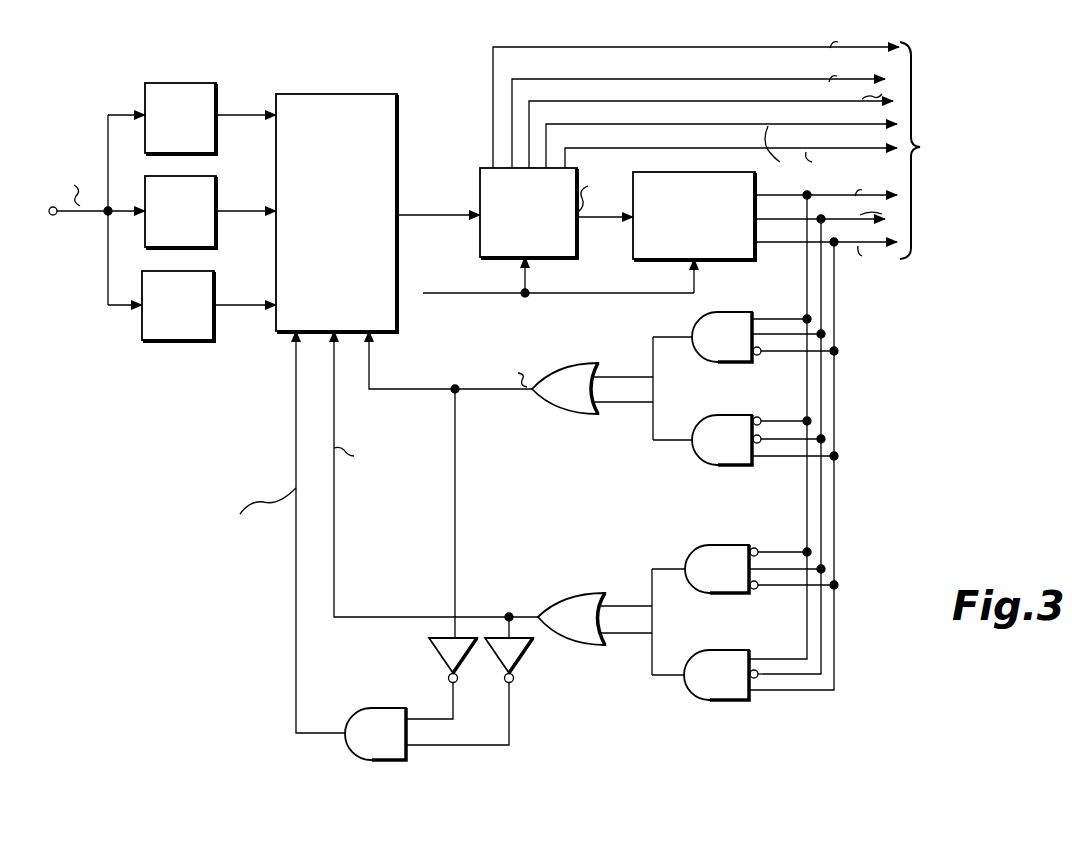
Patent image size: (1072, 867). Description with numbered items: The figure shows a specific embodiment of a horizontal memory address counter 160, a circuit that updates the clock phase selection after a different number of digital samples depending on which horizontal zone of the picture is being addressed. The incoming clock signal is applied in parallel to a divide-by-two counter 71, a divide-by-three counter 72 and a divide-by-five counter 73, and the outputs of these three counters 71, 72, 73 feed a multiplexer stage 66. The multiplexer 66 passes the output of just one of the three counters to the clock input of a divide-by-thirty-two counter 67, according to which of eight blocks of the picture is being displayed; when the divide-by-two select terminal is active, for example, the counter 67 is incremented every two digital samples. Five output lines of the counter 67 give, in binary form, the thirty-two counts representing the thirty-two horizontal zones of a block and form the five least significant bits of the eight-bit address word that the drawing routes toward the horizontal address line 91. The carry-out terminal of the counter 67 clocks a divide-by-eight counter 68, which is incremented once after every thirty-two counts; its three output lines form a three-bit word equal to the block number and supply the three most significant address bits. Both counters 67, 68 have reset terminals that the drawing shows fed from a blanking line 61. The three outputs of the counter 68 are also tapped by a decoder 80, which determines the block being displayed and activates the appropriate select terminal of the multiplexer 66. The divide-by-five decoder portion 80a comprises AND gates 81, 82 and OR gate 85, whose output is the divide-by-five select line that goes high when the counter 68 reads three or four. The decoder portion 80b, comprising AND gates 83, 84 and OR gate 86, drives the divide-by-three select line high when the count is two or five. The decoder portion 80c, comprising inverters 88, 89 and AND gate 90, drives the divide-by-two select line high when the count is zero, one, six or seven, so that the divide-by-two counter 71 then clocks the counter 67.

The horizontal memory address counter 160 is at (189, 466).
The divide-by-2 counter 71 is at (214, 282).
The divide-by-3 counter 72 is at (216, 186).
The divide-by-5 counter 73 is at (216, 92).
The multiplexer stage 66 is at (397, 110).
The divide-by-32 counter 67 is at (480, 241).
The divide-by-8 counter 68 is at (633, 243).
The blanking line 61 is at (430, 294).
The horizontal address line 91 is at (918, 152).
The decoder 80 is at (586, 510).
The divide-by-5 decoder portion 80a is at (707, 404).
The decoder portion 80b is at (712, 634).
The decoder portion 80c is at (554, 719).
The AND gate 81 is at (746, 312).
The AND gate 82 is at (735, 466).
The AND gate 83 is at (732, 524).
The AND gate 84 is at (720, 700).
The OR gate 85 is at (594, 344).
The OR gate 86 is at (575, 592).
The inverter 88 is at (523, 658).
The inverter 89 is at (446, 656).
The AND gate 90 is at (364, 708).